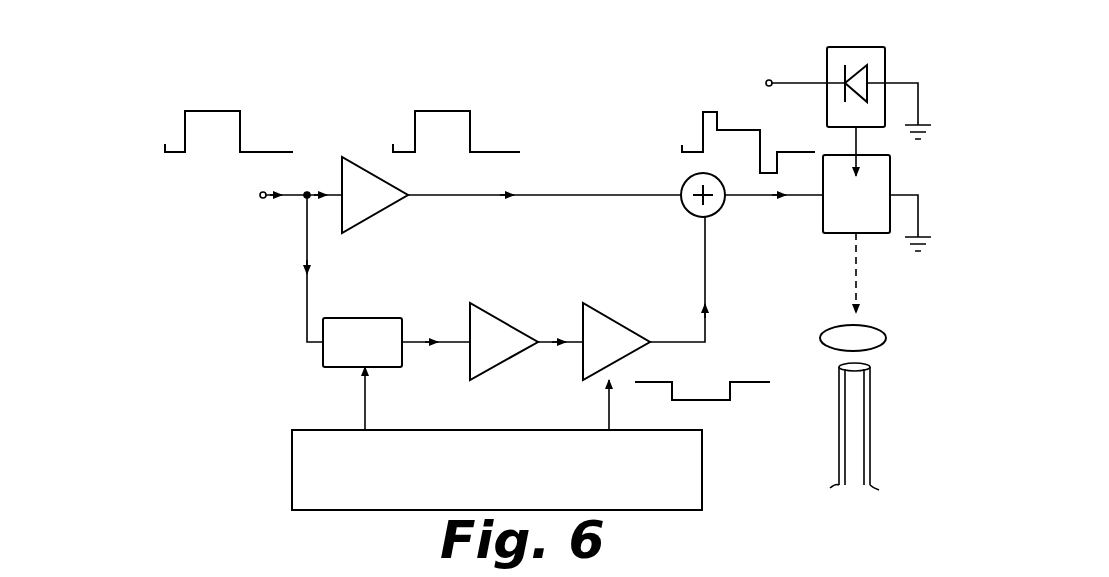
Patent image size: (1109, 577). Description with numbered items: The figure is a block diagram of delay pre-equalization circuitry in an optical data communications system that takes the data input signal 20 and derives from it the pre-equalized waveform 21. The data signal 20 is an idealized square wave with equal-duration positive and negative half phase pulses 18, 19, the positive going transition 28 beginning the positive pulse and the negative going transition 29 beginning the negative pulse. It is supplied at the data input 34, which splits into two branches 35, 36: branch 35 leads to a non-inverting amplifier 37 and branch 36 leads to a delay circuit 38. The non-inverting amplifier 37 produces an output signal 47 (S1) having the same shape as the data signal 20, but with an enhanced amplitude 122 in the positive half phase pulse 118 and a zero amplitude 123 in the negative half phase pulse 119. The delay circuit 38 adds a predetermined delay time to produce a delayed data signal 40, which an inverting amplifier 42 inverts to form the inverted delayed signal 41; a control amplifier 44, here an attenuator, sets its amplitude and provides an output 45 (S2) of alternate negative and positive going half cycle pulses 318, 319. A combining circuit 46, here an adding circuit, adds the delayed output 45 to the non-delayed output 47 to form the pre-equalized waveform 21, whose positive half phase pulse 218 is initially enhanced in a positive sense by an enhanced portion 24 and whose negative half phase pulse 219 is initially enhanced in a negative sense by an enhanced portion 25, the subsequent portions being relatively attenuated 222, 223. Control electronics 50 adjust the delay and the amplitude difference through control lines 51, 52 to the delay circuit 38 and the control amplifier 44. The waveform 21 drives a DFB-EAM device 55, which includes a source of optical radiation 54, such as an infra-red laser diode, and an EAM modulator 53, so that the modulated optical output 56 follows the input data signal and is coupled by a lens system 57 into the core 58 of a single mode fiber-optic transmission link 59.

The positive half phase pulse 18 is at (182, 138).
The negative half phase pulse 19 is at (266, 149).
The data input signal 20 is at (218, 108).
The pre-equalized waveform 21 is at (695, 130).
The enhanced portion 24 is at (705, 112).
The enhanced portion 25 is at (770, 178).
The positive going transition 28 is at (415, 128).
The negative going transition 29 is at (470, 128).
The data input 34 is at (262, 200).
The branch 35 is at (322, 191).
The branch 36 is at (313, 270).
The non-inverting amplifier 37 is at (380, 211).
The delay circuit 38 is at (323, 360).
The delayed data signal 40 is at (432, 340).
The inverted delayed signal 41 is at (555, 357).
The inverting amplifier 42 is at (517, 323).
The control amplifier 44 is at (620, 322).
The output 45 is at (714, 306).
The combining circuit 46 is at (690, 212).
The output signal 47 is at (512, 206).
The control electronics 50 is at (292, 482).
The control line 51 is at (365, 408).
The control line 52 is at (608, 413).
The EAM modulator 53 is at (877, 235).
The source of optical radiation 54 is at (885, 75).
The DFB-EAM device 55 is at (888, 121).
The optical output 56 is at (850, 274).
The lens system 57 is at (876, 330).
The core 58 is at (866, 402).
The single mode fiber-optic transmission link 59 is at (870, 445).
The positive half phase pulse 118 is at (445, 108).
The negative half phase pulse 119 is at (506, 152).
The amplitude 122 is at (433, 110).
The amplitude 123 is at (498, 152).
The positive half phase pulse 218 is at (722, 110).
The negative half phase pulse 219 is at (787, 160).
The attenuated portion 222 is at (725, 128).
The attenuated portion 223 is at (797, 141).
The negative going half cycle pulse 318 is at (696, 404).
The positive going half cycle pulse 319 is at (749, 380).